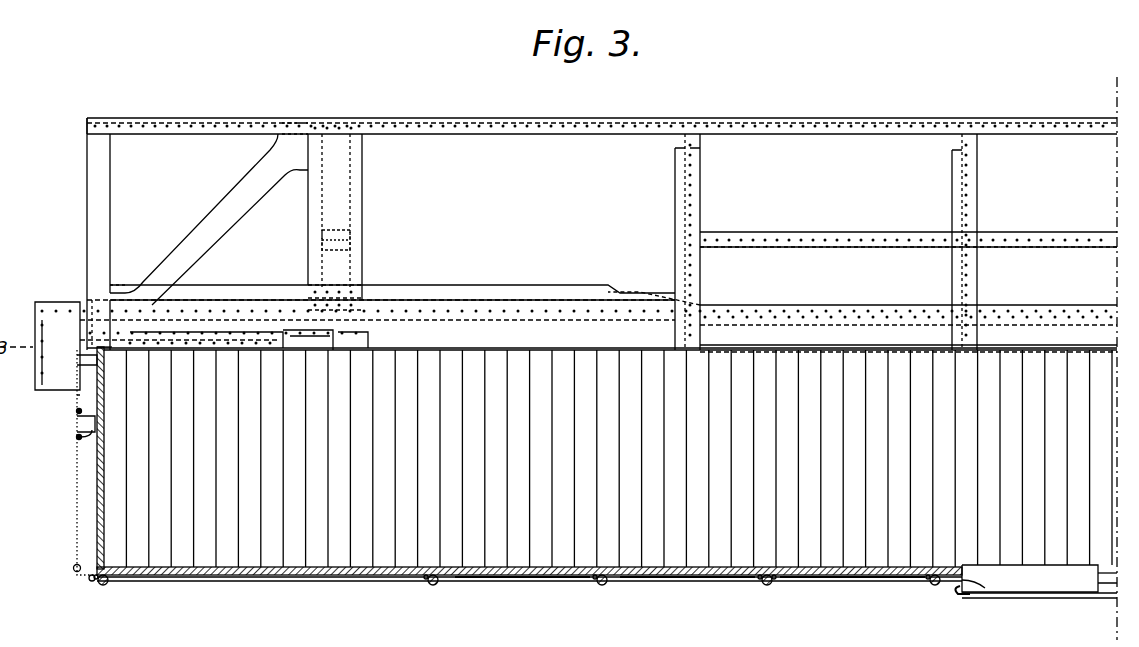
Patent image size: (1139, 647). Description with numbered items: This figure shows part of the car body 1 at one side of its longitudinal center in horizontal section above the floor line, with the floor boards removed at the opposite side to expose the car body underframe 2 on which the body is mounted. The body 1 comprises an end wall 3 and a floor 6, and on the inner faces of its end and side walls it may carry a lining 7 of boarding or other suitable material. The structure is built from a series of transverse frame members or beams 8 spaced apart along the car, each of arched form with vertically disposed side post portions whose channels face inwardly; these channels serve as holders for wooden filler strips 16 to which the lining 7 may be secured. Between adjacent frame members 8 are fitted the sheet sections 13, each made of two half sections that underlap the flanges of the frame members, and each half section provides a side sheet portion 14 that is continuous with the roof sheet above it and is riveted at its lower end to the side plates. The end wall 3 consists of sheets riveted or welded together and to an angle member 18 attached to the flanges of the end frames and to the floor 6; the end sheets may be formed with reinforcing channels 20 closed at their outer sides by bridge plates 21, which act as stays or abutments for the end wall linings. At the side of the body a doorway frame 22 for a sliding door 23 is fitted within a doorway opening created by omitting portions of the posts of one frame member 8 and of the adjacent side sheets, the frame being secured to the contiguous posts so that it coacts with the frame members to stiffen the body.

The car body 1 is at (213, 578).
The car body underframe 2 is at (362, 212).
The end wall 3 is at (77, 508).
The floor 6 is at (497, 567).
The lining 7 is at (104, 515).
The frame member 8 is at (430, 585).
The sheet section 13 is at (330, 572).
The side sheet portion 14 is at (565, 582).
The wooden filler strip 16 is at (106, 584).
The angle member 18 is at (77, 580).
The reinforcing channel 20 is at (85, 440).
The bridge plate 21 is at (75, 420).
The doorway frame 22 is at (990, 594).
The sliding door 23 is at (1060, 602).